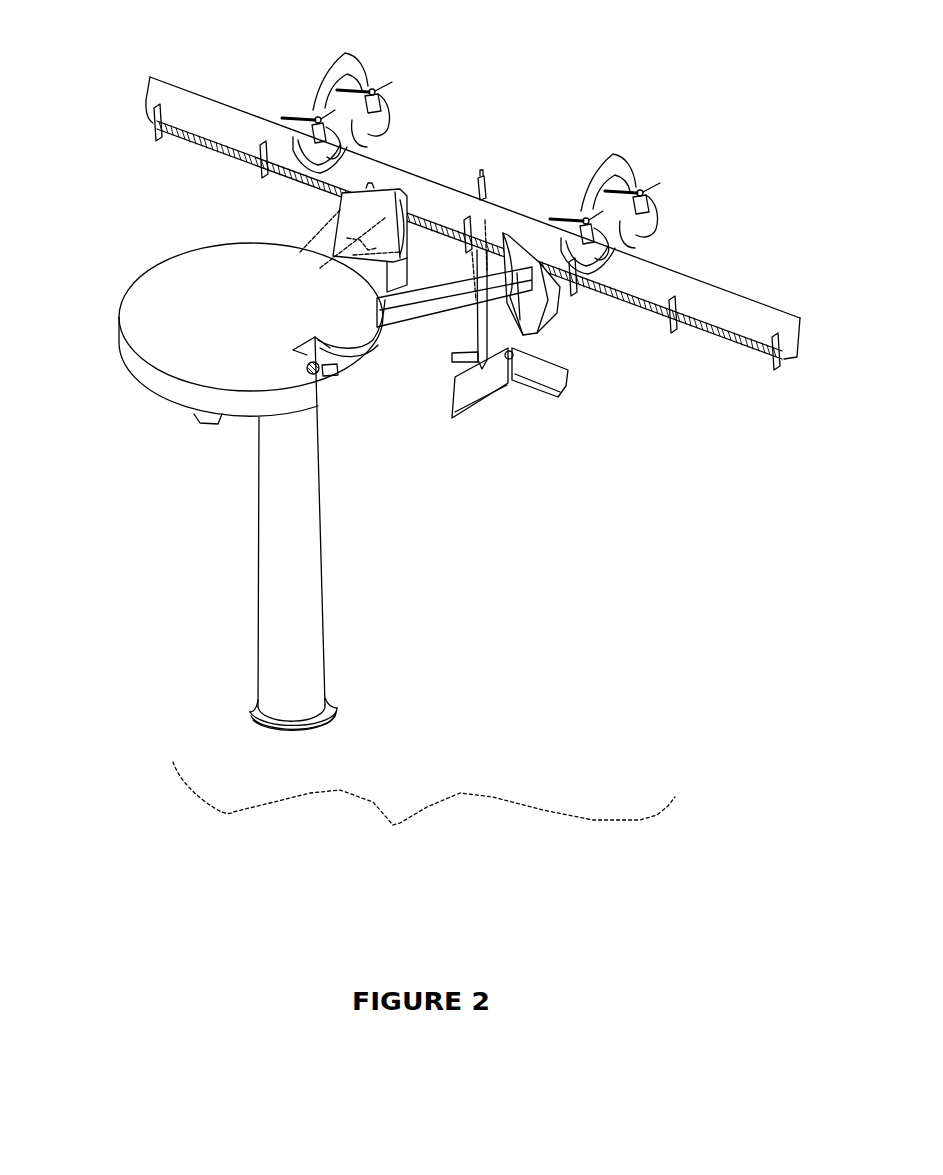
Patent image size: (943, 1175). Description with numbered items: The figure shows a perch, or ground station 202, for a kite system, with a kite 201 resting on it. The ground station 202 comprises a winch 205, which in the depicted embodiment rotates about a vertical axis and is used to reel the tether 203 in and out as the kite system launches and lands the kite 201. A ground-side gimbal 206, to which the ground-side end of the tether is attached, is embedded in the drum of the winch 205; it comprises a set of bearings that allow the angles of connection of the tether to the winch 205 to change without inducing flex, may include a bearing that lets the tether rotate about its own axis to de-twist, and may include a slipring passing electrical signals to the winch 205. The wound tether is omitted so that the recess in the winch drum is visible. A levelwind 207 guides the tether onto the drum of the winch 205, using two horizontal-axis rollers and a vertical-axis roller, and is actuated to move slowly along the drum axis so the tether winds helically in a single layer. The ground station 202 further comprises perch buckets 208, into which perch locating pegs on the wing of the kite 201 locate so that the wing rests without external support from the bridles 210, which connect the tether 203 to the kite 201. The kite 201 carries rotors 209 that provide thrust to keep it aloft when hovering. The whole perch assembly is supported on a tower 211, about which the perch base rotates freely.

The kite 201 is at (205, 118).
The ground station 202 is at (335, 369).
The tether 203 is at (343, 377).
The winch 205 is at (204, 364).
The ground-side gimbal 206 is at (314, 376).
The levelwind 207 is at (378, 316).
The perch buckets 208 is at (385, 205).
The rotors 209 is at (313, 110).
The bridles 210 is at (333, 190).
The tower 211 is at (300, 490).